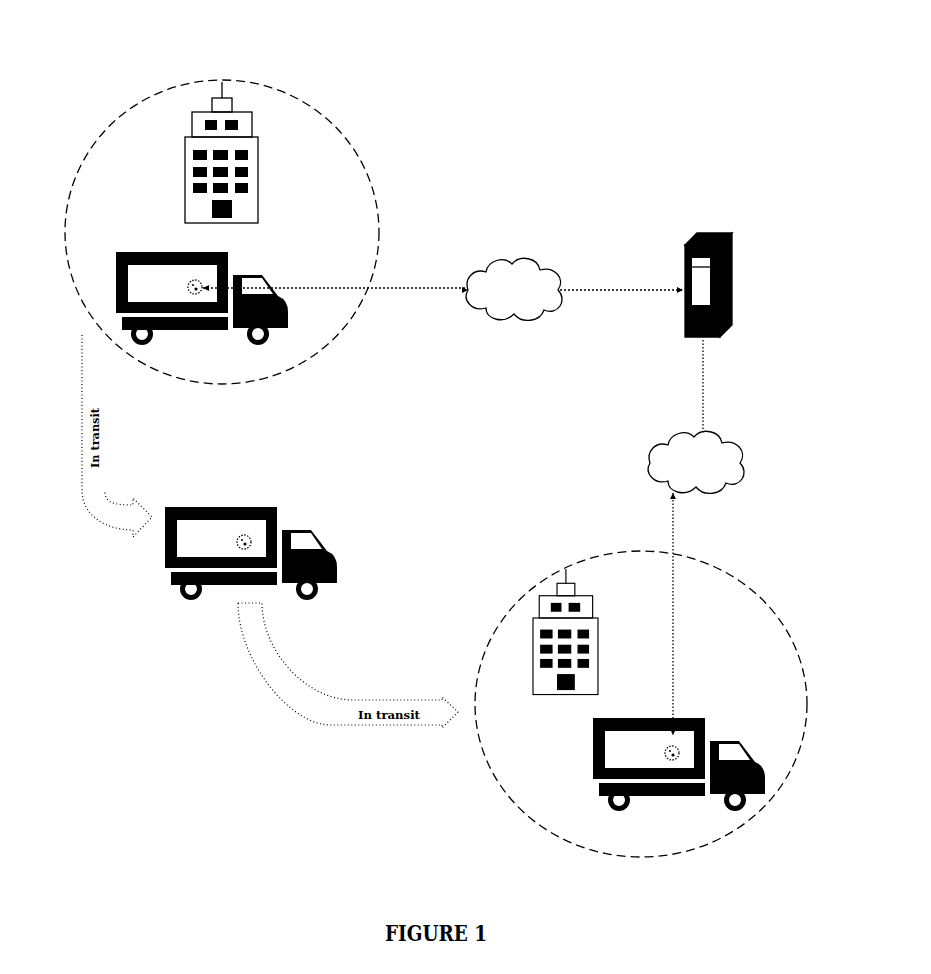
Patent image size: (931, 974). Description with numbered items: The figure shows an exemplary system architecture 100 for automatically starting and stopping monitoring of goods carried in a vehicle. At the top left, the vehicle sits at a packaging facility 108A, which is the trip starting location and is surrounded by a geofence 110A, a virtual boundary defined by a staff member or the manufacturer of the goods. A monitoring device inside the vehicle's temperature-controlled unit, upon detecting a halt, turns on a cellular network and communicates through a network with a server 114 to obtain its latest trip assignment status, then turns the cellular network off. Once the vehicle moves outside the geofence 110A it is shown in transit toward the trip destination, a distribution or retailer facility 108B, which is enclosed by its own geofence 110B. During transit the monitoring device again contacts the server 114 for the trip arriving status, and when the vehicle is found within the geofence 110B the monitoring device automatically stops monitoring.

The system architecture 100 is at (468, 70).
The packaging facility 108A is at (251, 152).
The distribution facility 108B is at (589, 631).
The geofence of the trip starting location 110A is at (316, 107).
The geofence of the trip destination location 110B is at (740, 571).
The server 114 is at (720, 232).